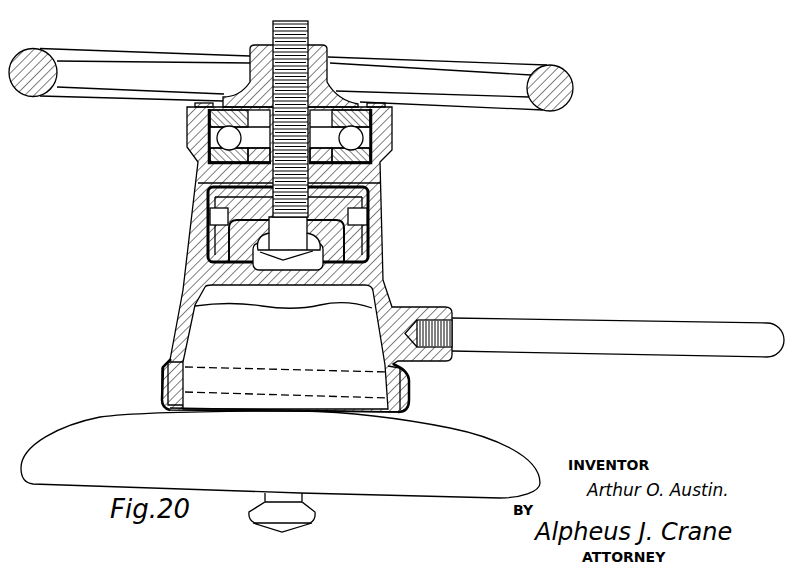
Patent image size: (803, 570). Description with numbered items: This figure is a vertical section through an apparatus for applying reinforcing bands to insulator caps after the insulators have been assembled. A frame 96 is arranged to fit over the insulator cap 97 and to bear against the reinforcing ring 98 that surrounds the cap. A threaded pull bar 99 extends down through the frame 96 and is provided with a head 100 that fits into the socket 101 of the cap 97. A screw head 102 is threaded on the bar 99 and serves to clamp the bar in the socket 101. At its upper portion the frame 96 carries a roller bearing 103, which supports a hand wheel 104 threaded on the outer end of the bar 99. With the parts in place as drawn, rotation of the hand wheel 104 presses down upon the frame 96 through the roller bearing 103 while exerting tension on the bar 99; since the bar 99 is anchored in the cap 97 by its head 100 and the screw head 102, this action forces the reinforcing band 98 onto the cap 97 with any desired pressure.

The frame 96 is at (380, 280).
The insulator cap 97 is at (392, 307).
The reinforcing ring 98 is at (166, 398).
The threaded pull bar 99 is at (310, 26).
The head 100 is at (310, 240).
The socket 101 is at (302, 265).
The screw head 102 is at (350, 202).
The roller bearing 103 is at (381, 165).
The hand wheel 104 is at (330, 60).